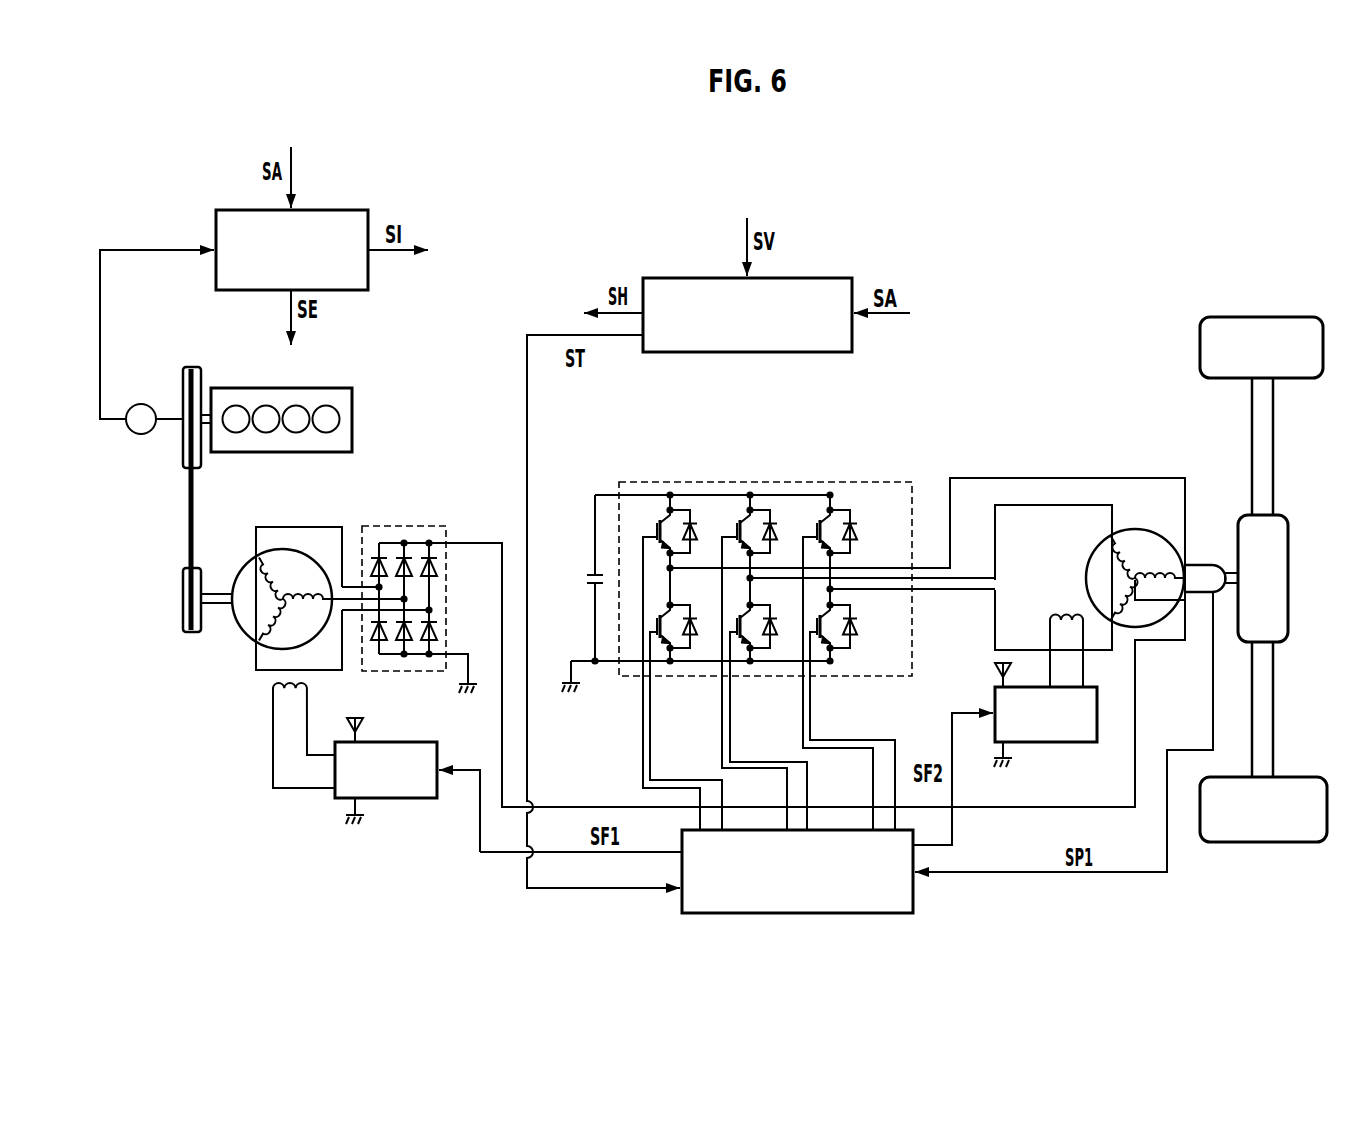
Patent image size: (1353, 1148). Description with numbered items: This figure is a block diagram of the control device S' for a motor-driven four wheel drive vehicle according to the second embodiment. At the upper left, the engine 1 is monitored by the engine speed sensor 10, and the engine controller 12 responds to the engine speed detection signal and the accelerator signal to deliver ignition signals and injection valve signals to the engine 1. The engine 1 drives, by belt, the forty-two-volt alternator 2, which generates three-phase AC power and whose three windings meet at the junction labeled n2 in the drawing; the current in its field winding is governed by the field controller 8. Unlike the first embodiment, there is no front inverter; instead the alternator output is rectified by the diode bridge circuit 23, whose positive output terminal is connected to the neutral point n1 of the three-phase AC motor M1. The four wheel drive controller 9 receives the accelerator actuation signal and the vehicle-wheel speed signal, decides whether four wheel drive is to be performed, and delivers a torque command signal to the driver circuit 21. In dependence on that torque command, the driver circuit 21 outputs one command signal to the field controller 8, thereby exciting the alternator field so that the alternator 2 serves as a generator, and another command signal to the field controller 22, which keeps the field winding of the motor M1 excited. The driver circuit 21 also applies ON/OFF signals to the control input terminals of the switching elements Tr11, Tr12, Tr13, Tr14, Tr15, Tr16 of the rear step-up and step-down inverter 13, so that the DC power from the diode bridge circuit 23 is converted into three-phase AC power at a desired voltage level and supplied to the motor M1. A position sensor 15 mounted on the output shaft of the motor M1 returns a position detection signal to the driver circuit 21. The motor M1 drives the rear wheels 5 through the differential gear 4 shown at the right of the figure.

The engine 1 is at (352, 419).
The 42V alternator 2 is at (256, 555).
The differential gear 4 is at (1290, 580).
The rear wheels 5 is at (1275, 317).
The field controller 8 is at (400, 798).
The four wheel drive controller 9 is at (820, 278).
The engine speed sensor 10 is at (141, 404).
The engine controller 12 is at (345, 210).
The rear step-up and step-down inverter 13 is at (778, 604).
The position sensor 15 is at (1213, 562).
The driver circuit 21 is at (913, 890).
The field controller 22 is at (1065, 742).
The diode bridge circuit 23 is at (420, 527).
The three-phase AC motor M1 is at (1090, 568).
The neutral point n1 is at (1140, 572).
The generator rotation speed n2 is at (284, 602).
The switching element Tr11 is at (667, 513).
The switching element Tr12 is at (747, 513).
The switching element Tr13 is at (827, 513).
The switching element Tr14 is at (663, 647).
The switching element Tr15 is at (742, 647).
The switching element Tr16 is at (822, 647).
The control device S' is at (1003, 187).